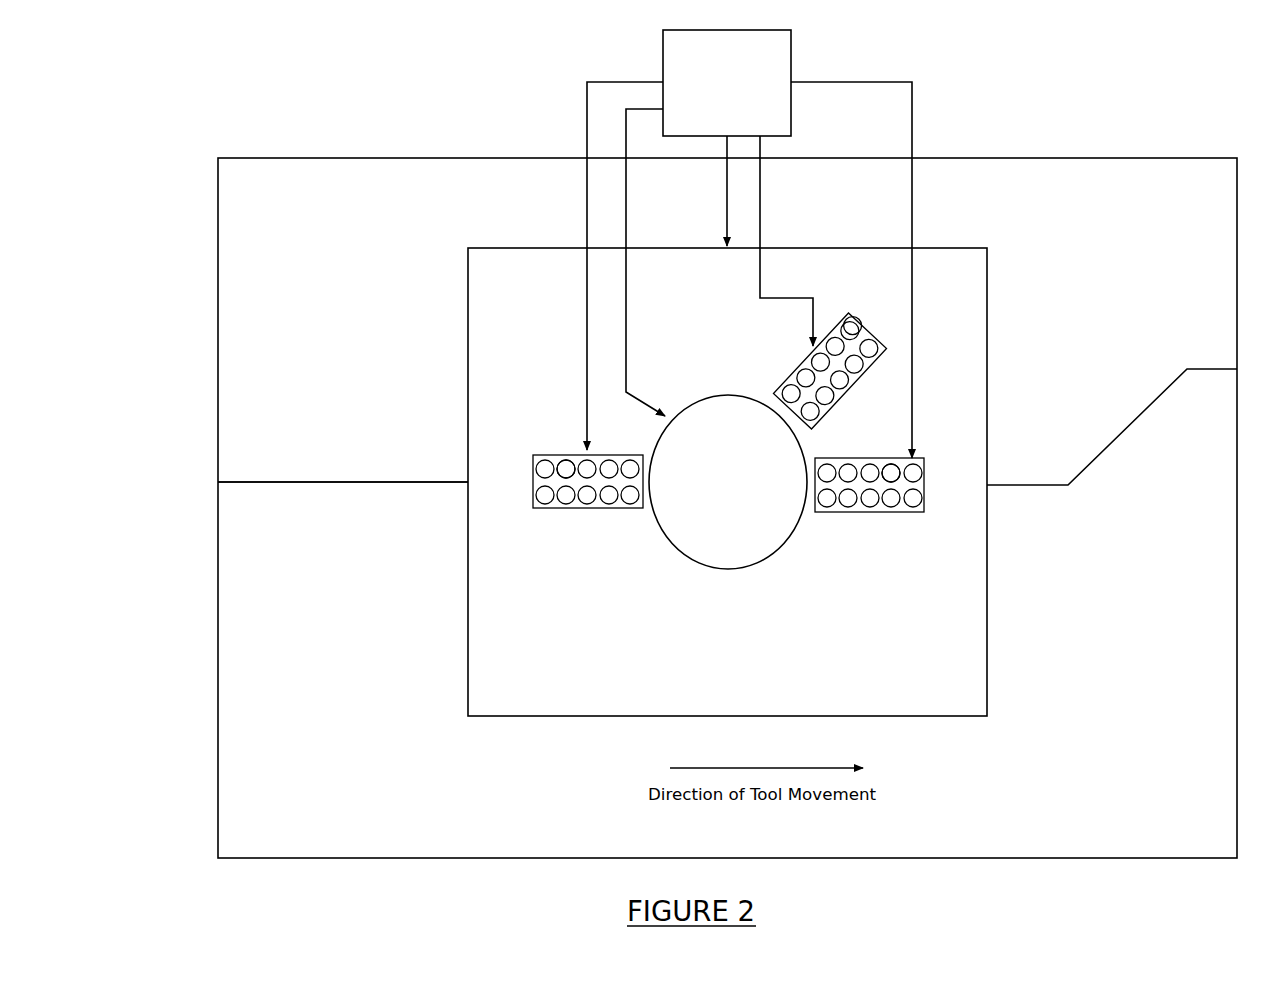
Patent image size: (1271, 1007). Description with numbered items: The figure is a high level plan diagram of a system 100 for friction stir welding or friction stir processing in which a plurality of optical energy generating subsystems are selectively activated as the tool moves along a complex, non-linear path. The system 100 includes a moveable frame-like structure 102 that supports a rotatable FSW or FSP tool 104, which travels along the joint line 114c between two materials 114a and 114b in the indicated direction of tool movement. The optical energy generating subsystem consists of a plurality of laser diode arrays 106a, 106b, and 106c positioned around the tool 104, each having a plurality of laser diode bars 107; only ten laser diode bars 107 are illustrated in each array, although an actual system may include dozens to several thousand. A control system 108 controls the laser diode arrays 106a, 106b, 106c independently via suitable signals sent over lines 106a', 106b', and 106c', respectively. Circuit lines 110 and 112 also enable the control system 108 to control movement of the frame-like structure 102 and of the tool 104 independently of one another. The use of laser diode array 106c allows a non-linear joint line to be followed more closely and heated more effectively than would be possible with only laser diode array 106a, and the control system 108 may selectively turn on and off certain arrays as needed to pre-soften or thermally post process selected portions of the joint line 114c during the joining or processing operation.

The system 100 is at (727, 466).
The moveable frame-like structure 102 is at (664, 482).
The FSW or FSP tool 104 is at (721, 512).
The laser diode array 106a is at (864, 513).
The laser diode array 106b is at (806, 371).
The laser diode array 106c is at (571, 504).
The line 106a' is at (905, 270).
The line 106b' is at (810, 241).
The line 106c' is at (572, 266).
The laser diode bar 107 is at (691, 373).
The control system 108 is at (727, 83).
The circuit line 110 is at (723, 227).
The circuit line 112 is at (627, 205).
The material 114a is at (312, 441).
The material 114b is at (312, 555).
The joint line 114c is at (1112, 418).